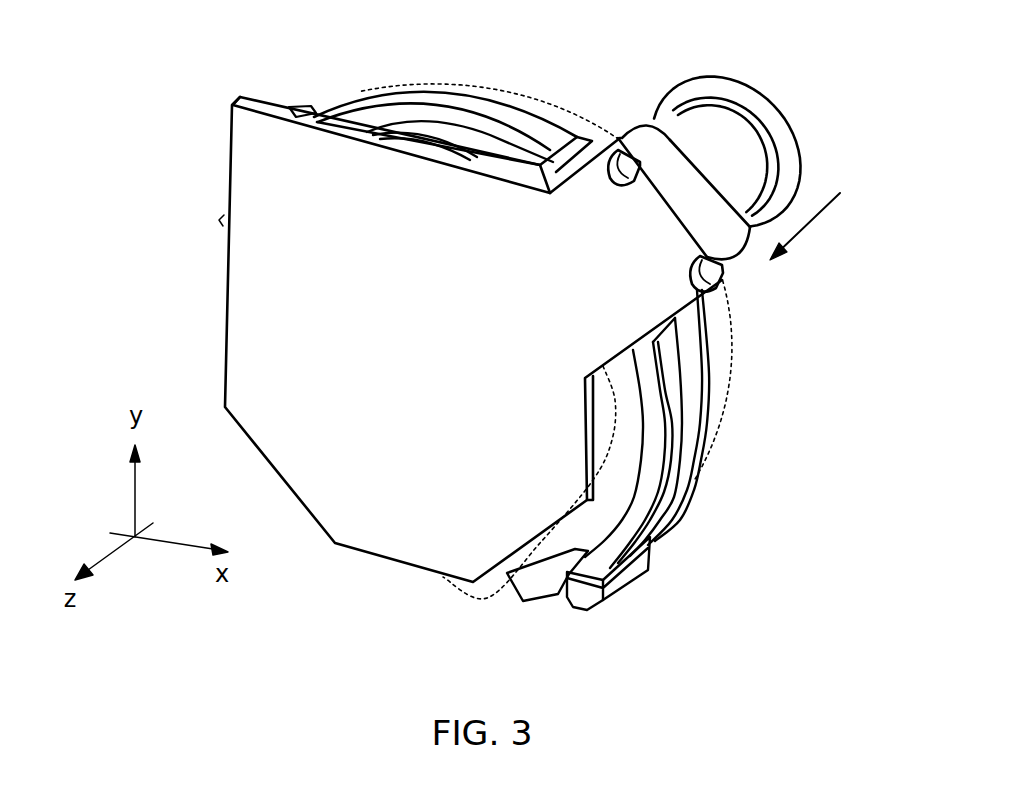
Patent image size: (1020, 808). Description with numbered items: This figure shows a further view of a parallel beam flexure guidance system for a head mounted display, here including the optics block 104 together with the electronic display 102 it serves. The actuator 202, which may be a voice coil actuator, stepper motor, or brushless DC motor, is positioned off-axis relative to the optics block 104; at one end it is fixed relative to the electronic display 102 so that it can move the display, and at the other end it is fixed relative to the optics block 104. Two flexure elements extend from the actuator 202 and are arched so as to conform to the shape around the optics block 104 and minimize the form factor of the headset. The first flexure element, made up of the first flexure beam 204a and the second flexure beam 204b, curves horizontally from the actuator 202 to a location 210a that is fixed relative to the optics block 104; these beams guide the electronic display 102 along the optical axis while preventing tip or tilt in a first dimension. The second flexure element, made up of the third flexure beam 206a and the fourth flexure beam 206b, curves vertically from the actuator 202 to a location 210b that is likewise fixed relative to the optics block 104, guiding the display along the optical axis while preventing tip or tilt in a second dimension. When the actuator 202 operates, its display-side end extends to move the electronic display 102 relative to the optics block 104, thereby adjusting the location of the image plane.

The electronic display 102 is at (247, 140).
The optics block 104 is at (717, 342).
The actuator 202 is at (750, 92).
The first flexure beam 204a is at (453, 148).
The second flexure beam 204b is at (477, 113).
The third flexure beam 206a is at (637, 517).
The fourth flexure beam 206b is at (687, 443).
The location fixed relative to the optics block 210a is at (288, 107).
The location fixed relative to the optics block 210b is at (612, 580).